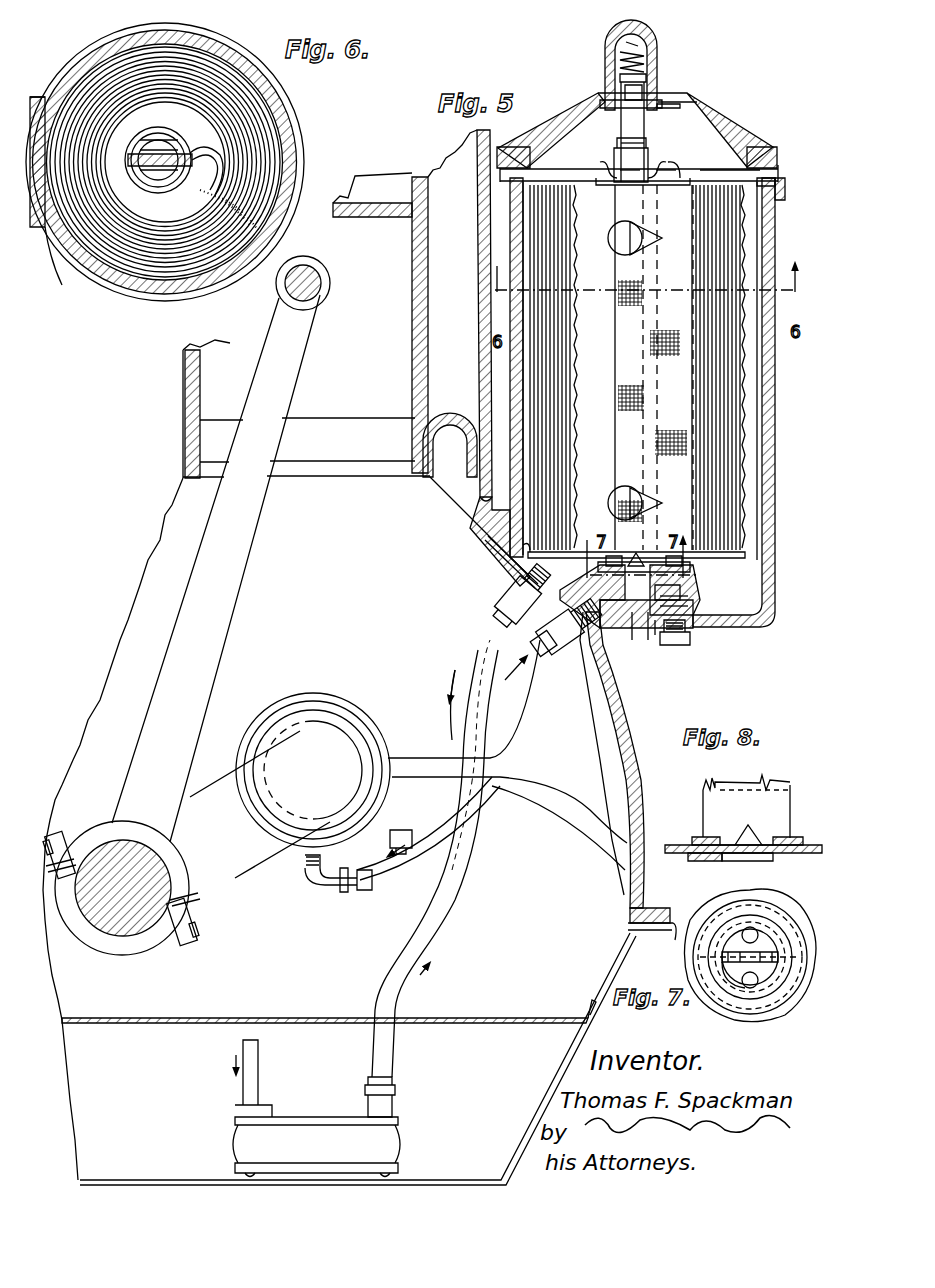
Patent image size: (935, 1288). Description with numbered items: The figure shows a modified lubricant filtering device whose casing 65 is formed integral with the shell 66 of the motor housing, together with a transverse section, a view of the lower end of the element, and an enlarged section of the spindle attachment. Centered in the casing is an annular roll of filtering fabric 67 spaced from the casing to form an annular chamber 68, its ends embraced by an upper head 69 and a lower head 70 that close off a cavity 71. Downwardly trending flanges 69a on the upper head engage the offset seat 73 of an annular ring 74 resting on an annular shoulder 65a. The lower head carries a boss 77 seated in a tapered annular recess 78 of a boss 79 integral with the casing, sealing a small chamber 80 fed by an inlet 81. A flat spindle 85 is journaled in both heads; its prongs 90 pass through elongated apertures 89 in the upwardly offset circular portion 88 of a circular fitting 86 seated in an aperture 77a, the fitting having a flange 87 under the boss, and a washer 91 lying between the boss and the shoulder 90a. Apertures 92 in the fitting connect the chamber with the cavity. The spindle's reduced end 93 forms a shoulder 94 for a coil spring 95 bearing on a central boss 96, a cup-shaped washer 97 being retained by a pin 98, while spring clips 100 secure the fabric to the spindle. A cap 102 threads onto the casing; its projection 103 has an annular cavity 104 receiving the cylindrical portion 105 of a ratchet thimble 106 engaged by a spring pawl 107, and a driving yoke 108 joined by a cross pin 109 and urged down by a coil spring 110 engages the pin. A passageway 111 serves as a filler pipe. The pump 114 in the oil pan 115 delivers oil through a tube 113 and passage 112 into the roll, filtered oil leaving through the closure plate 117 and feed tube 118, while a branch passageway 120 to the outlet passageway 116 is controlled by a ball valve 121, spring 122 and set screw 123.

In FIG. 5, the casing 65 is at (776, 470).
In FIG. 6, the casing 65 is at (298, 156).
In FIG. 5, the annular shoulder 65a is at (775, 186).
In FIG. 5, the shell 66 is at (633, 772).
In FIG. 5, the annular roll of filtering fabric 67 is at (722, 403).
In FIG. 6, the annular roll of filtering fabric 67 is at (252, 137).
In FIG. 5, the annular chamber 68 is at (757, 420).
In FIG. 6, the annular chamber 68 is at (280, 182).
In FIG. 5, the upper head 69 is at (680, 180).
In FIG. 6, the upper head 69 is at (158, 171).
In FIG. 5, the downwardly trending flanges 69a is at (740, 172).
In FIG. 5, the lower head 70 is at (652, 510).
In FIG. 7, the lower head 70 is at (807, 950).
In FIG. 5, the cavity 71 is at (654, 367).
In FIG. 5, the offset seat 73 is at (778, 196).
In FIG. 5, the annular ring 74 is at (778, 160).
In FIG. 5, the boss 77 is at (605, 545).
In FIG. 8, the boss 77 is at (800, 840).
In FIG. 7, the boss 77 is at (795, 982).
In FIG. 8, the aperture 77a is at (698, 842).
In FIG. 5, the tapered annular recess 78 is at (600, 572).
In FIG. 5, the boss 79 is at (600, 580).
In FIG. 5, the small chamber 80 is at (680, 590).
In FIG. 5, the inlet 81 is at (640, 640).
In FIG. 5, the spindle 85 is at (645, 362).
In FIG. 6, the spindle 85 is at (140, 152).
In FIG. 8, the spindle 85 is at (750, 772).
In FIG. 7, the spindle 85 is at (765, 980).
In FIG. 8, the circular fitting 86 is at (742, 856).
In FIG. 7, the circular fitting 86 is at (735, 982).
In FIG. 8, the flange 87 is at (700, 860).
In FIG. 8, the upwardly offset circular portion 88 is at (768, 840).
In FIG. 7, the elongated apertures 89 is at (742, 952).
In FIG. 8, the prongs 90 is at (728, 845).
In FIG. 7, the prongs 90 is at (700, 957).
In FIG. 8, the shoulder 90a is at (790, 838).
In FIG. 8, the washer 91 is at (792, 840).
In FIG. 7, the apertures 92 is at (756, 928).
In FIG. 5, the reduced end 93 is at (625, 152).
In FIG. 5, the shoulder 94 is at (645, 185).
In FIG. 5, the coil spring 95 is at (665, 180).
In FIG. 6, the coil spring 95 is at (165, 132).
In FIG. 5, the central boss 96 is at (670, 166).
In FIG. 5, the cup-shaped washer 97 is at (660, 160).
In FIG. 5, the pin 98 is at (648, 138).
In FIG. 5, the spring clips 100 is at (618, 245).
In FIG. 6, the spring clips 100 is at (190, 148).
In FIG. 5, the cap 102 is at (700, 100).
In FIG. 5, the central upwardly extending projection 103 is at (658, 60).
In FIG. 5, the annular cavity 104 is at (655, 38).
In FIG. 5, the cylindrical portion 105 is at (625, 55).
In FIG. 5, the ratchet thimble 106 is at (615, 95).
In FIG. 5, the spring pawl 107 is at (665, 102).
In FIG. 5, the driving yoke 108 is at (660, 75).
In FIG. 5, the cross pin 109 is at (625, 75).
In FIG. 5, the coil spring 110 is at (630, 48).
In FIG. 5, the passageway 111 is at (495, 362).
In FIG. 6, the passageway 111 is at (62, 198).
In FIG. 5, the passage 112 is at (592, 650).
In FIG. 5, the tube 113 is at (458, 885).
In FIG. 5, the pump 114 is at (380, 1140).
In FIG. 5, the oil pan 115 is at (552, 1080).
In FIG. 5, the outlet passageway 116 is at (530, 572).
In FIG. 5, the closure plate 117 is at (500, 554).
In FIG. 5, the feed tube 118 is at (462, 652).
In FIG. 5, the branch passageway 120 is at (690, 598).
In FIG. 5, the ball valve 121 is at (690, 608).
In FIG. 5, the spring 122 is at (668, 635).
In FIG. 5, the set screw 123 is at (685, 640).